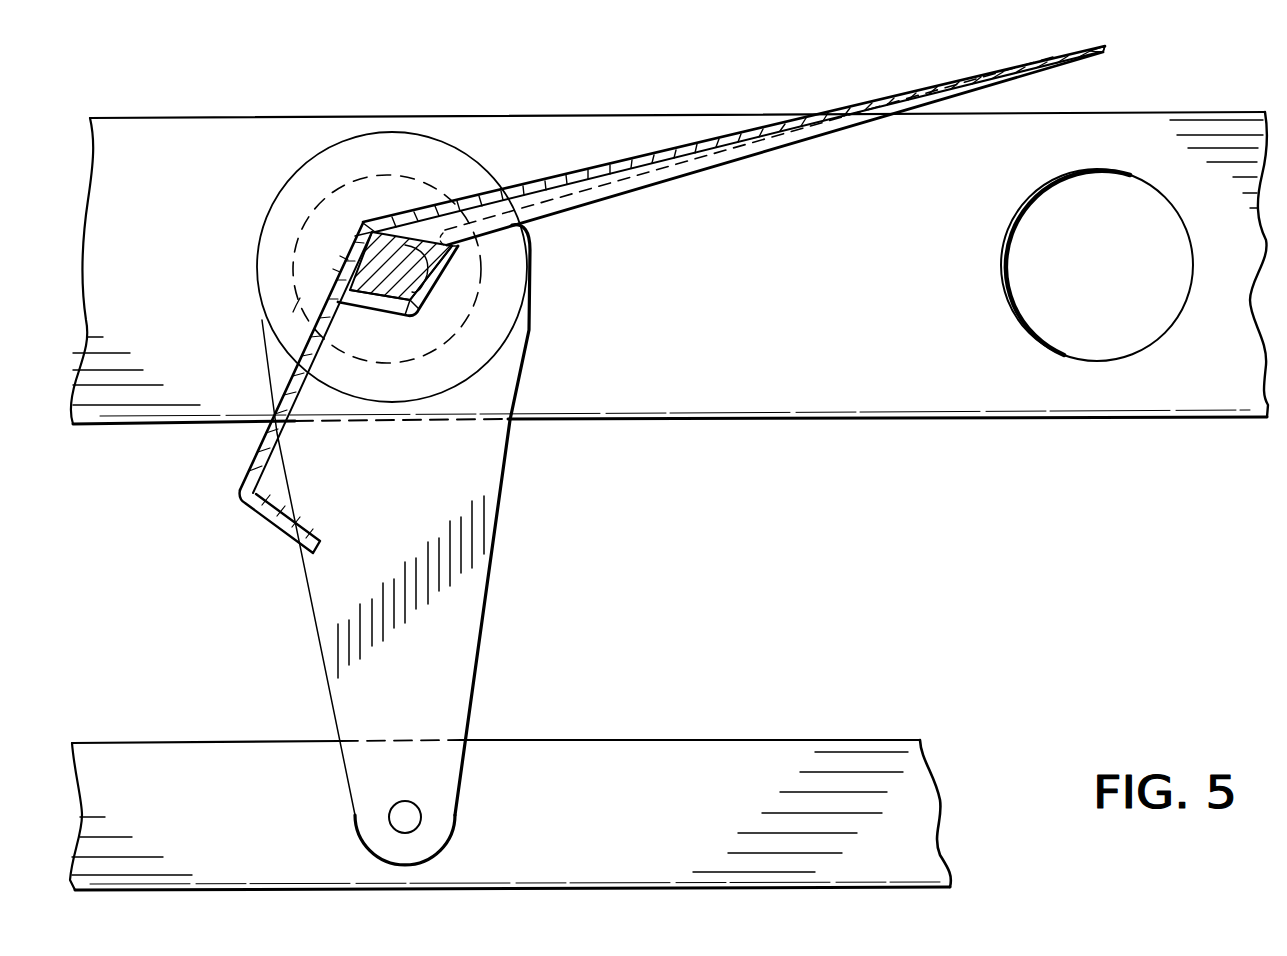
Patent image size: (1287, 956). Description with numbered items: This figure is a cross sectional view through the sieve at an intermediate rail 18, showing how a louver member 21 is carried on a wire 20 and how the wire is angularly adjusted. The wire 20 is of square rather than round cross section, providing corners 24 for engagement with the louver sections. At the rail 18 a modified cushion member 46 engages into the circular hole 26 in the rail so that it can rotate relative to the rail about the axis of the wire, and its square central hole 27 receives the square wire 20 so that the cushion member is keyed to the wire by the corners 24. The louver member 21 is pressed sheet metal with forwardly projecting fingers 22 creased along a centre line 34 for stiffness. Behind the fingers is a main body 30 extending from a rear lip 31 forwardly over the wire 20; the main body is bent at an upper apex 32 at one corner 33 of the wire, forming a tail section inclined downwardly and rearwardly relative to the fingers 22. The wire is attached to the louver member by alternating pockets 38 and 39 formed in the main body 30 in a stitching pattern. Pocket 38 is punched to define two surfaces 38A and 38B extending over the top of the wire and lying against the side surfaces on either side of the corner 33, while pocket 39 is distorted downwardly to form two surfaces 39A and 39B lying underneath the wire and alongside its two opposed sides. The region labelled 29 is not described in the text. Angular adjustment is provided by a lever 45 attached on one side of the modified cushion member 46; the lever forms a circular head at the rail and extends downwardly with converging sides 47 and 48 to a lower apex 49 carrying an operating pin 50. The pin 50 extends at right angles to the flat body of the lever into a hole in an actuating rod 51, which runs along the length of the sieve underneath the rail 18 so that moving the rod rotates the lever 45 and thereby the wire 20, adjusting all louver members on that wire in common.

The intermediate rail 18 is at (882, 425).
The wire 20 is at (370, 340).
The louver member 21 is at (862, 98).
The fingers 22 is at (1108, 52).
The corners 24 is at (415, 280).
The hole 26 is at (1032, 328).
The central hole 27 is at (433, 293).
The hole edge 29 is at (300, 298).
The main body 30 is at (255, 446).
The rear lip 31 is at (262, 517).
The upper apex 32 is at (360, 220).
The corner 33 is at (355, 236).
The centre line 34 is at (783, 140).
The pocket 38 is at (340, 256).
The surface 38A is at (333, 269).
The surface 38B is at (532, 210).
The pocket 39 is at (420, 318).
The surface 39A is at (380, 318).
The surface 39B is at (433, 307).
The lever 45 is at (411, 548).
The modified cushion member 46 is at (447, 143).
The converging side 47 is at (326, 668).
The converging side 48 is at (483, 656).
The lower apex 49 is at (423, 869).
The operating pin 50 is at (400, 812).
The actuating rod 51 is at (692, 742).